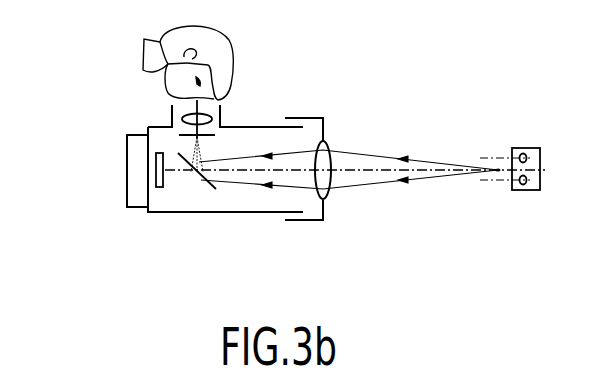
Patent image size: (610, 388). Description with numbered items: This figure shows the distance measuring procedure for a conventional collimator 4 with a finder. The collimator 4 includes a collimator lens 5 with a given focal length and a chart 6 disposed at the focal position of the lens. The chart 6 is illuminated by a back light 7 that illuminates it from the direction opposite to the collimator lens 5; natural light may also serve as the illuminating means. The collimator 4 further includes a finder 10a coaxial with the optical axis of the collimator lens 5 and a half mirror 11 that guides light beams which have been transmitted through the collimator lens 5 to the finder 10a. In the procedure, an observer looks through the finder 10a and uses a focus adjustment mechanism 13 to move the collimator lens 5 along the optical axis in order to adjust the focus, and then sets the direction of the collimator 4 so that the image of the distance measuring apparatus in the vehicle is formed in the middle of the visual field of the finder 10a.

The collimator 4 is at (267, 127).
The collimator lens 5 is at (318, 162).
The chart 6 is at (160, 187).
The back light 7 is at (137, 193).
The finder 10a is at (220, 117).
The half mirror 11 is at (204, 185).
The focus adjustment mechanism 13 is at (323, 207).